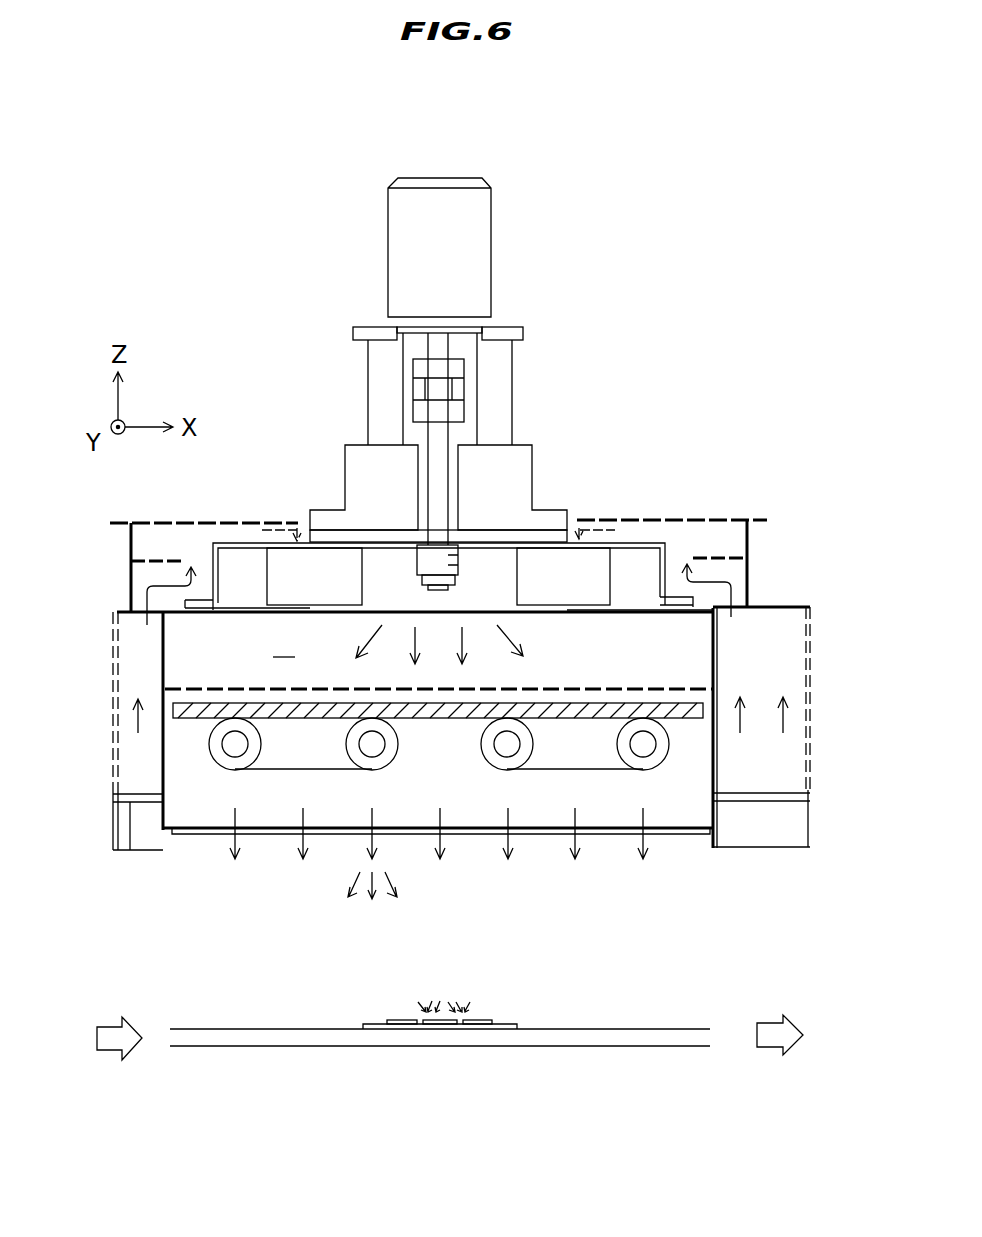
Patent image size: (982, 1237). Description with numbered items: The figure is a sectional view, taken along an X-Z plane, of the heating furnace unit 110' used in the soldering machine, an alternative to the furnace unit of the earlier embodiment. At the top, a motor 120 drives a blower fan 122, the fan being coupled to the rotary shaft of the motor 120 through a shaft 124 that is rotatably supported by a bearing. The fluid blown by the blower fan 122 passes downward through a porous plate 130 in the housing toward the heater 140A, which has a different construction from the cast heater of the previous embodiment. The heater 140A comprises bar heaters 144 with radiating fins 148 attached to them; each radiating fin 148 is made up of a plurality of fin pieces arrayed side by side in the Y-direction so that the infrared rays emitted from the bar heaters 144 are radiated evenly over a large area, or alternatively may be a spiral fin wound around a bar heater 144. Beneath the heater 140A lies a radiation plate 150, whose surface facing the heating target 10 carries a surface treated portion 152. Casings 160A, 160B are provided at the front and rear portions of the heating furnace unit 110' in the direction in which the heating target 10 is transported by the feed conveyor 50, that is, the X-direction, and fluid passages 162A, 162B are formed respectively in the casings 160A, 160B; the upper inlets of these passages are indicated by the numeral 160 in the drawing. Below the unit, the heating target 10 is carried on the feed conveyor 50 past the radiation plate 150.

The heating furnace unit 110' is at (467, 428).
The motor 120 is at (475, 260).
The blower fan 122 is at (563, 570).
The shaft 124 is at (430, 435).
The porous plate 130 is at (440, 728).
The heater 140A is at (439, 769).
The bar heaters 144 is at (365, 743).
The radiating fins 148 is at (267, 762).
The radiation plate 150 is at (210, 827).
The surface treated portion 152 is at (260, 835).
The gas supply duct 160 is at (228, 520).
The casing 160A is at (813, 635).
The casing 160B is at (115, 708).
The fluid passage 162A is at (792, 662).
The fluid passage 162B is at (142, 652).
The feed conveyor 50 is at (233, 1035).
The heating target 10 is at (508, 1023).